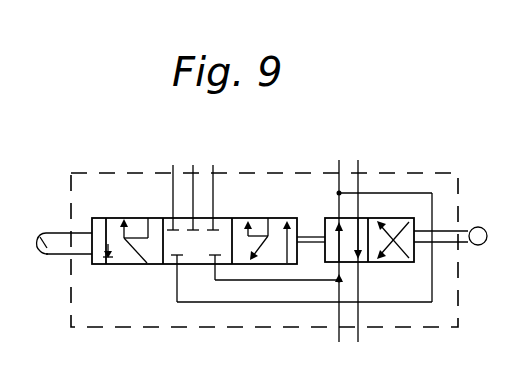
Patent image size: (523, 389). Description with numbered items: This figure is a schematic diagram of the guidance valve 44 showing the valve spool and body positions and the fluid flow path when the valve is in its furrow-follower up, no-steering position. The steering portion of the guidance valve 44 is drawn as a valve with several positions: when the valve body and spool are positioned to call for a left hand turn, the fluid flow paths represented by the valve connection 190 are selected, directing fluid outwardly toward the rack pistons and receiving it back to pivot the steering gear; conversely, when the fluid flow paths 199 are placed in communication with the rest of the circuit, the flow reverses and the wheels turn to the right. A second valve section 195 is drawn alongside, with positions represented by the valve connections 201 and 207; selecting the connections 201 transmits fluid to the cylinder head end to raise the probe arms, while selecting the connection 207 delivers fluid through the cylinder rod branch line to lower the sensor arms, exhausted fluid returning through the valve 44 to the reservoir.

The guidance valve 44 is at (417, 274).
The valve connection 190 is at (130, 265).
The fluid flow paths 199 is at (240, 265).
The pilot operated valve 195 is at (393, 302).
The valve connections 201 is at (361, 218).
The connection 207 is at (412, 218).